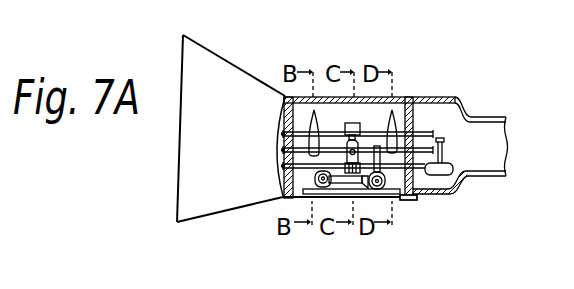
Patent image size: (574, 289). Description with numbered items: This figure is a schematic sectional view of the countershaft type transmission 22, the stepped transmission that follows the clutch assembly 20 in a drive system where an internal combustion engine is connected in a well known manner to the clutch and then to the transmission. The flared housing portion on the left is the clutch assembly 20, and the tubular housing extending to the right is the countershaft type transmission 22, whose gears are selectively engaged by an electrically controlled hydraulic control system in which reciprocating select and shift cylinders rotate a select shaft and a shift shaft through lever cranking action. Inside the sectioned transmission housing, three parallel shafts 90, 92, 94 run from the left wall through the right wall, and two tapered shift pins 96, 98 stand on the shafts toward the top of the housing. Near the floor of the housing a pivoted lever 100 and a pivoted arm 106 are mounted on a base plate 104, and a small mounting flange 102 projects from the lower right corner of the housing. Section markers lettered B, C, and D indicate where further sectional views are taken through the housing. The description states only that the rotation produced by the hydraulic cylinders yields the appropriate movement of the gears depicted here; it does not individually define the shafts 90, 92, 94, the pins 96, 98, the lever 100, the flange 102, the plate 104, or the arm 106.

The clutch assembly 20 is at (236, 66).
The countershaft type transmission 22 is at (461, 96).
The upper shaft 90 is at (283, 131).
The middle shaft 92 is at (283, 151).
The lower shaft 94 is at (283, 168).
The tapered pin 96 is at (316, 97).
The tapered pin 98 is at (402, 97).
The pivoted lever 100 is at (344, 188).
The mounting flange 102 is at (402, 200).
The base plate 104 is at (312, 186).
The pivoted arm 106 is at (374, 192).